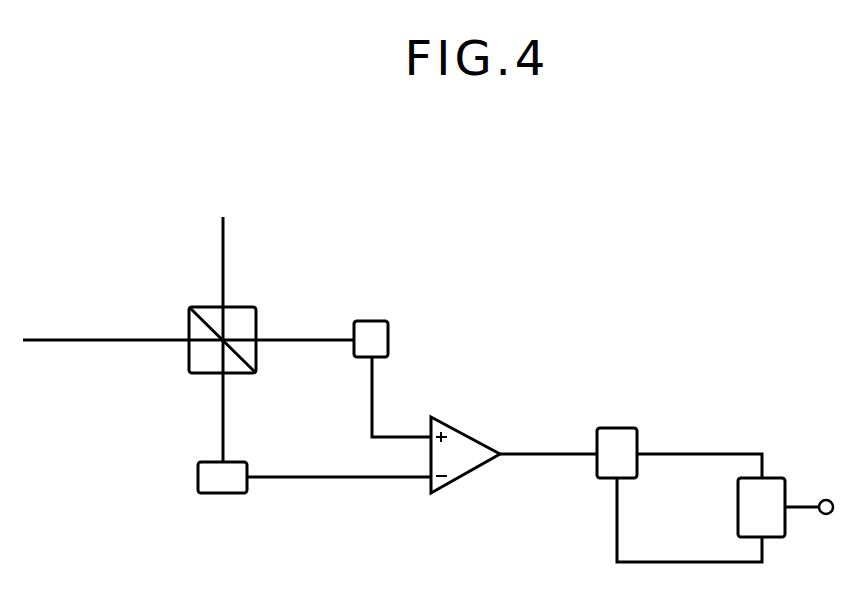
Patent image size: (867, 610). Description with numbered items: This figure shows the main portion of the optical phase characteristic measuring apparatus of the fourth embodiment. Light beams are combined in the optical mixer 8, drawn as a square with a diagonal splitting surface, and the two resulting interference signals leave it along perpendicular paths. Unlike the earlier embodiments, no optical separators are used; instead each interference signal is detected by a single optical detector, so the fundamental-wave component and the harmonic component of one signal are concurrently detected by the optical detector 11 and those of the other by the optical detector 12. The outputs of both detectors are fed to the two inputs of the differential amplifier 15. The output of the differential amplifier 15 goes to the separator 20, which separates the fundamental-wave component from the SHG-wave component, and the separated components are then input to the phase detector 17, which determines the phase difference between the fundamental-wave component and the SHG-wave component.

The optical mixer 8 is at (207, 313).
The optical detector 11 is at (375, 343).
The optical detector 12 is at (207, 475).
The differential amplifier 15 is at (462, 450).
The separator 20 is at (617, 443).
The phase detector 17 is at (770, 490).